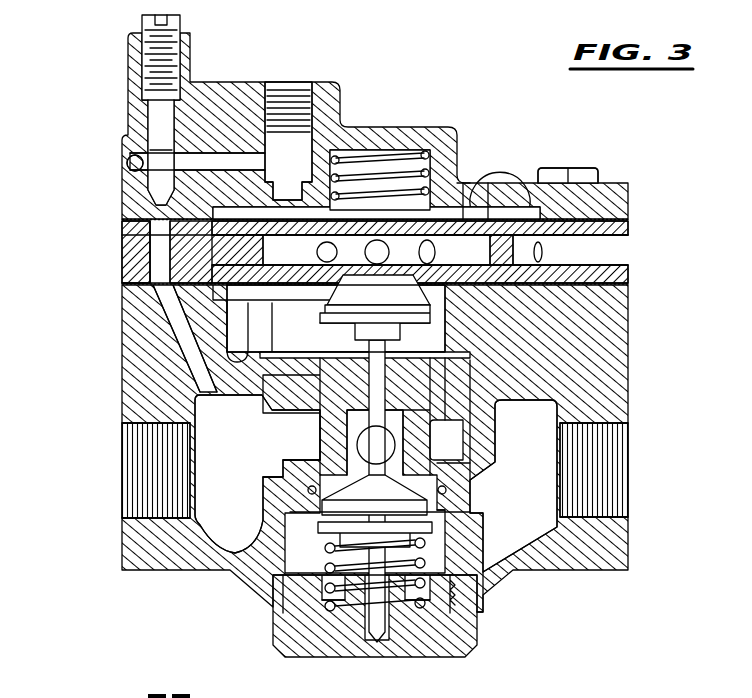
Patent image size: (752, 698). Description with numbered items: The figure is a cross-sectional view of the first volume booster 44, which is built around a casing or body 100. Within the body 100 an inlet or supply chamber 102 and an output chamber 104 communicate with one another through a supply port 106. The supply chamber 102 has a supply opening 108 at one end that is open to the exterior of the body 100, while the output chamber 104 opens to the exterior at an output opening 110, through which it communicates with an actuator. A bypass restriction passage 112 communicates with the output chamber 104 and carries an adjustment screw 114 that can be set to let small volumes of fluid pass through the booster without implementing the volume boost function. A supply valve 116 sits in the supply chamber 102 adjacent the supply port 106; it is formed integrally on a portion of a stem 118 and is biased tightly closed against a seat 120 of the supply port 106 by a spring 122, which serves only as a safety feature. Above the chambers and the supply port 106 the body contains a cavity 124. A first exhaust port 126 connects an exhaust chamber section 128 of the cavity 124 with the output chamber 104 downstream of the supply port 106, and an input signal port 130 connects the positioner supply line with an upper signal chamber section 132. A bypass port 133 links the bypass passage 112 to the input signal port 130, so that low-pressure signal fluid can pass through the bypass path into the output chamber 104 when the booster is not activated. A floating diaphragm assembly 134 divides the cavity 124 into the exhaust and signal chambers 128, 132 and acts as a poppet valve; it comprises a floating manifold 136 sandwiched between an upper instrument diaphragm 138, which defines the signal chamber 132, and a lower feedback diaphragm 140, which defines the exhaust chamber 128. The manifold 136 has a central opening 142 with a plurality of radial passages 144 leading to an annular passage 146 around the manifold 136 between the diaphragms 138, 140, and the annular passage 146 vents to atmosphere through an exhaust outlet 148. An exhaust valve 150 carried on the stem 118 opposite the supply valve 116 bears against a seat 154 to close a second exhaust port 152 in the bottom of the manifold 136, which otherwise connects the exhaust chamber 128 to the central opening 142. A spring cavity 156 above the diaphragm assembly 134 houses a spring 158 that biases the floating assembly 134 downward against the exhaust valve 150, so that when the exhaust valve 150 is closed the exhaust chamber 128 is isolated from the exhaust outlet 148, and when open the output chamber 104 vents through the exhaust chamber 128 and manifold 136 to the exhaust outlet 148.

The first volume booster 44 is at (128, 163).
The body 100 is at (630, 420).
The supply chamber 102 is at (543, 491).
The output chamber 104 is at (255, 462).
The supply port 106 is at (445, 512).
The supply opening 108 is at (630, 522).
The output opening 110 is at (122, 498).
The bypass restriction passage 112 is at (232, 318).
The adjustment screw 114 is at (142, 35).
The supply valve 116 is at (292, 580).
The stem 118 is at (300, 478).
The seat 120 is at (425, 530).
The spring 122 is at (478, 600).
The cavity 124 is at (240, 305).
The first exhaust port 126 is at (215, 330).
The exhaust chamber section 128 is at (256, 345).
The input signal port 130 is at (290, 100).
The upper signal chamber section 132 is at (250, 210).
The bypass port 133 is at (205, 160).
The floating diaphragm assembly 134 is at (140, 238).
The floating manifold 136 is at (508, 225).
The upper diaphragm 138 is at (625, 205).
The lower diaphragm 140 is at (622, 285).
The central opening 142 is at (468, 205).
The radial passages 144 is at (485, 212).
The annular passage 146 is at (543, 252).
The exhaust outlet 148 is at (620, 240).
The exhaust valve 150 is at (455, 338).
The second exhaust port 152 is at (373, 298).
The seat 154 is at (440, 325).
The spring cavity 156 is at (372, 150).
The spring 158 is at (355, 165).